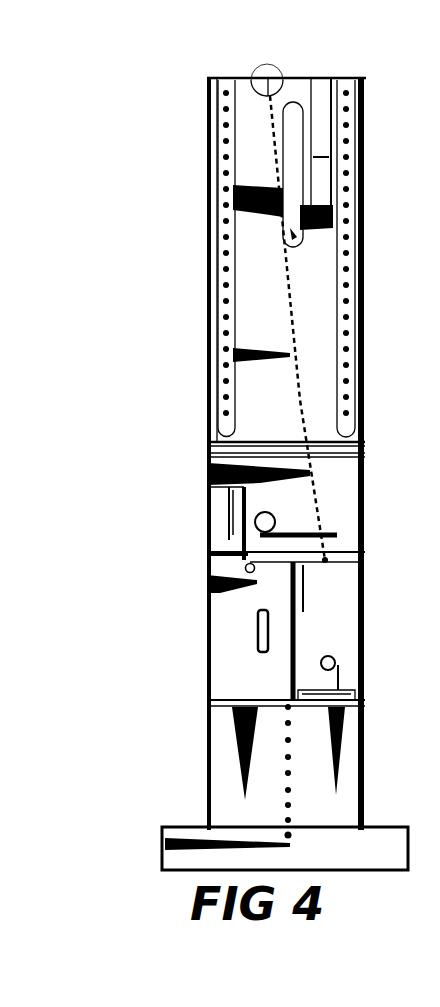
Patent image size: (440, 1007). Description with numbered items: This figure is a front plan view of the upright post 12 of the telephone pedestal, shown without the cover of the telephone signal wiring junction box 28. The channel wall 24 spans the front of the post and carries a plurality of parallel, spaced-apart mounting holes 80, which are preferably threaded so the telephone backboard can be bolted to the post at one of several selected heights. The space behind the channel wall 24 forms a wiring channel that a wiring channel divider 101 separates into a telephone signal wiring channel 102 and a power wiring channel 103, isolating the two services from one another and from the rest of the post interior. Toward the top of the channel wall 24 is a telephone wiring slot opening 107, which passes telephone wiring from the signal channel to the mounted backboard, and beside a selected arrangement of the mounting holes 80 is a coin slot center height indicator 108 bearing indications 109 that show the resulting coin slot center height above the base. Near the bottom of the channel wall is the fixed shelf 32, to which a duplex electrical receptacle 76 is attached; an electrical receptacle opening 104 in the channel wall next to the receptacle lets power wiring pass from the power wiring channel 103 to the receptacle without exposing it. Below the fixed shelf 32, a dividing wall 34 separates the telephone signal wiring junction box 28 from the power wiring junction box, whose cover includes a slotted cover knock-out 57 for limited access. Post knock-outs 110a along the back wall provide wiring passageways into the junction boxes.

The upright post 12 is at (207, 447).
The channel wall 24 is at (240, 273).
The telephone signal wiring junction box 28 is at (342, 632).
The fixed shelf 32 is at (350, 552).
The dividing wall 34 is at (300, 618).
The slotted cover knock-out 57 is at (258, 628).
The duplex electrical receptacle 76 is at (228, 523).
The mounting holes 80 is at (226, 126).
The wiring channel divider 101 is at (285, 315).
The telephone signal wiring channel 102 is at (274, 72).
The power wiring channel 103 is at (259, 72).
The electrical receptacle opening 104 is at (243, 562).
The telephone wiring slot opening 107 is at (298, 235).
The coin slot center height indicator 108 is at (323, 118).
The indications 109 is at (322, 157).
The post knock-outs 110a is at (338, 662).